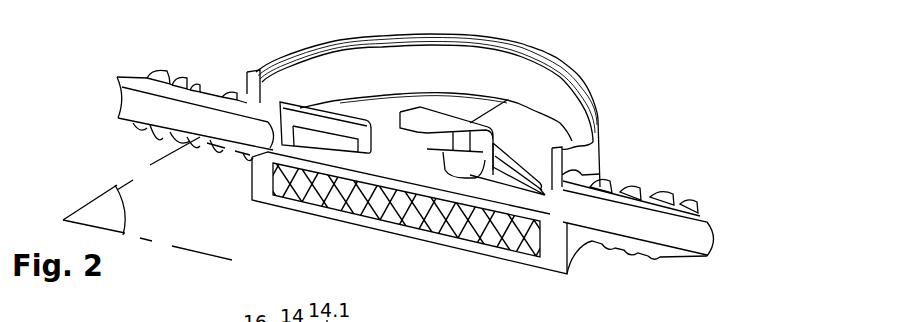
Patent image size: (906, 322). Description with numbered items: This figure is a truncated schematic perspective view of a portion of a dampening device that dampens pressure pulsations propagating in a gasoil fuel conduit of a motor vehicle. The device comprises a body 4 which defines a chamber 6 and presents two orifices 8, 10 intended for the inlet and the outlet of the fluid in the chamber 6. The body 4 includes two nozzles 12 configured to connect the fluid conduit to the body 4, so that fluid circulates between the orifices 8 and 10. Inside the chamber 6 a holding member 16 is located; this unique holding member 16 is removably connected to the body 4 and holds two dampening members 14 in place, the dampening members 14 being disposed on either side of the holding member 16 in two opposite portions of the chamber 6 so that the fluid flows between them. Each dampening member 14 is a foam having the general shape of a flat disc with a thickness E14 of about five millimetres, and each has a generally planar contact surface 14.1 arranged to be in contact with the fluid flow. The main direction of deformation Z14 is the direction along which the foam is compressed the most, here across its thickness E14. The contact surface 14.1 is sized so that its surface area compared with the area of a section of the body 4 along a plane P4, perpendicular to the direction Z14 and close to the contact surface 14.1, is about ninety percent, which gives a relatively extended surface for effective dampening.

The body 4 is at (557, 247).
The chamber 6 is at (474, 66).
The orifice 8 is at (259, 122).
The orifice 10 is at (539, 213).
The nozzle 12 is at (136, 124).
The dampening member 14 is at (302, 188).
The contact surface 14.1 is at (376, 96).
The holding member 16 is at (381, 163).
The main direction of deformation Z14 is at (395, 188).
The thickness E14 is at (465, 183).
The plane P4 is at (156, 198).